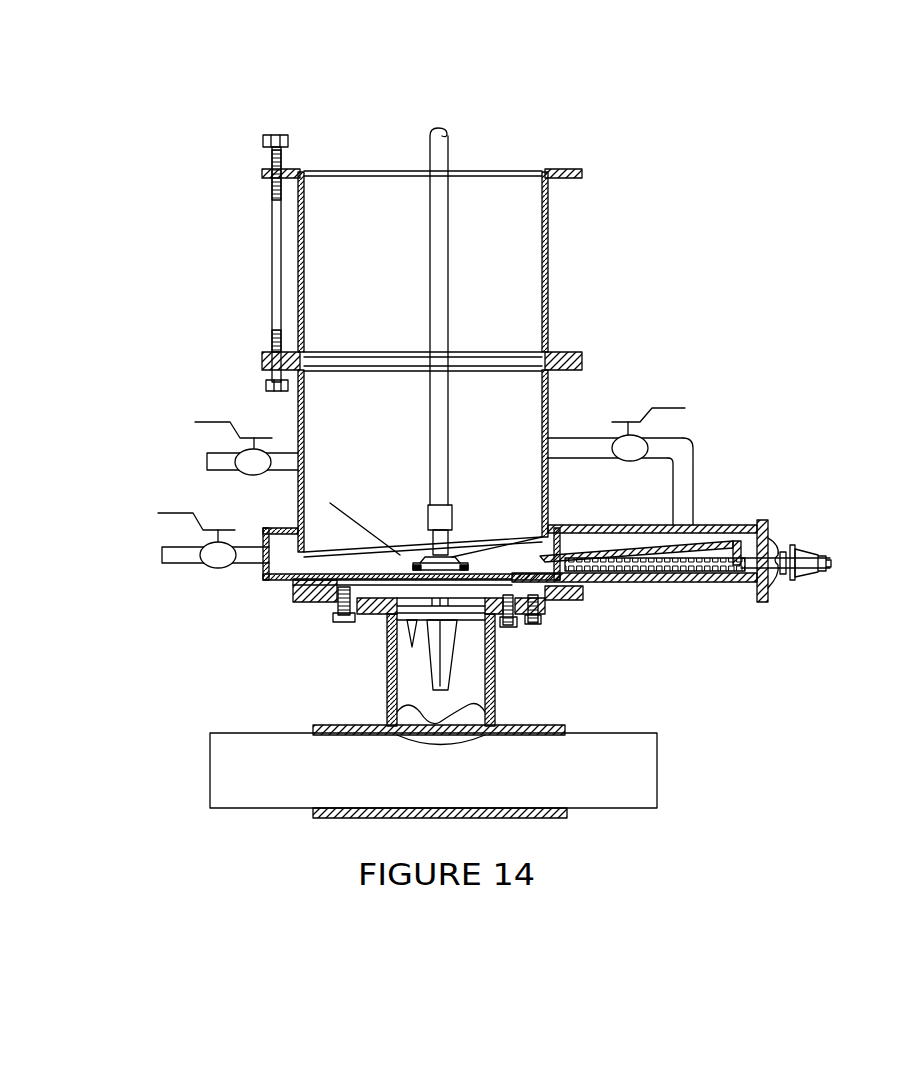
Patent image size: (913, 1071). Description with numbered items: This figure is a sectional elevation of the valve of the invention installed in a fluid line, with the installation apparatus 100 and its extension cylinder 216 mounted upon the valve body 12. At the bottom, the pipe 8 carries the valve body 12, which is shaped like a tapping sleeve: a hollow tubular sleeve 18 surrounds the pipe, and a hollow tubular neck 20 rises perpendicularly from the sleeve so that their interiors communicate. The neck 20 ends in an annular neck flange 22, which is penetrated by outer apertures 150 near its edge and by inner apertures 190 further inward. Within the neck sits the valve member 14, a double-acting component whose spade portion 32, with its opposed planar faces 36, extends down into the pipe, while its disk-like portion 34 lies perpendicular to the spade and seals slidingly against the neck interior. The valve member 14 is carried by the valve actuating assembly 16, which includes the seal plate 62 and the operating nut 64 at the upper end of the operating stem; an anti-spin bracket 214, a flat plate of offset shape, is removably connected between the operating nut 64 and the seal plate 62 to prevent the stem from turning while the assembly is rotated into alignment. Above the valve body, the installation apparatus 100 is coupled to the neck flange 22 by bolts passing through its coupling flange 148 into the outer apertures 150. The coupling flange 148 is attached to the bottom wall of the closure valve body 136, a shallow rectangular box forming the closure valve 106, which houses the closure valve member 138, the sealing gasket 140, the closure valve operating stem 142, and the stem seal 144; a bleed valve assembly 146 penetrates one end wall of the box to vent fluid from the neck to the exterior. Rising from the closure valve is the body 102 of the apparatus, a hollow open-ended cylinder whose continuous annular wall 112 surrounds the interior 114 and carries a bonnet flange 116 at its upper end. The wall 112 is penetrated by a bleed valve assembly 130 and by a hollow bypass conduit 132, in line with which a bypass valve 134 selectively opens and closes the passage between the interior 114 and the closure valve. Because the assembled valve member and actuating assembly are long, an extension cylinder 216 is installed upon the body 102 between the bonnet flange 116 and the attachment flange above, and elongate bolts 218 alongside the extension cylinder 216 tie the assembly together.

The pipe 8 is at (643, 757).
The valve body 12 is at (515, 698).
The valve member 14 is at (463, 653).
The valve actuating assembly 16 is at (413, 557).
The sleeve 18 is at (555, 818).
The neck 20 is at (387, 698).
The neck flange 22 is at (550, 608).
The spade portion 32 is at (387, 680).
The disk-like portion 34 is at (387, 642).
The planar faces 36 is at (387, 660).
The seal plate 62 is at (330, 503).
The operating nut 64 is at (467, 540).
The installation apparatus 100 is at (605, 308).
The body 102 is at (560, 413).
The closure valve 106 is at (667, 590).
The wall 112 is at (547, 393).
The interior 114 is at (393, 438).
The bonnet flange 116 is at (263, 352).
The bleed valve assembly 130 is at (207, 462).
The bypass conduit 132 is at (683, 448).
The bypass valve 134 is at (672, 423).
The valve body 136 is at (617, 583).
The closure valve member 138 is at (717, 577).
The sealing gasket 140 is at (712, 542).
The closure valve operating stem 142 is at (743, 560).
The stem seal 144 is at (767, 528).
The bleed valve assembly 146 is at (163, 548).
The coupling flange 148 is at (292, 588).
The outer apertures 150 is at (330, 607).
The inner apertures 190 is at (522, 613).
The anti-spin bracket 214 is at (462, 562).
The extension cylinder 216 is at (548, 253).
The bolts 218 is at (277, 253).